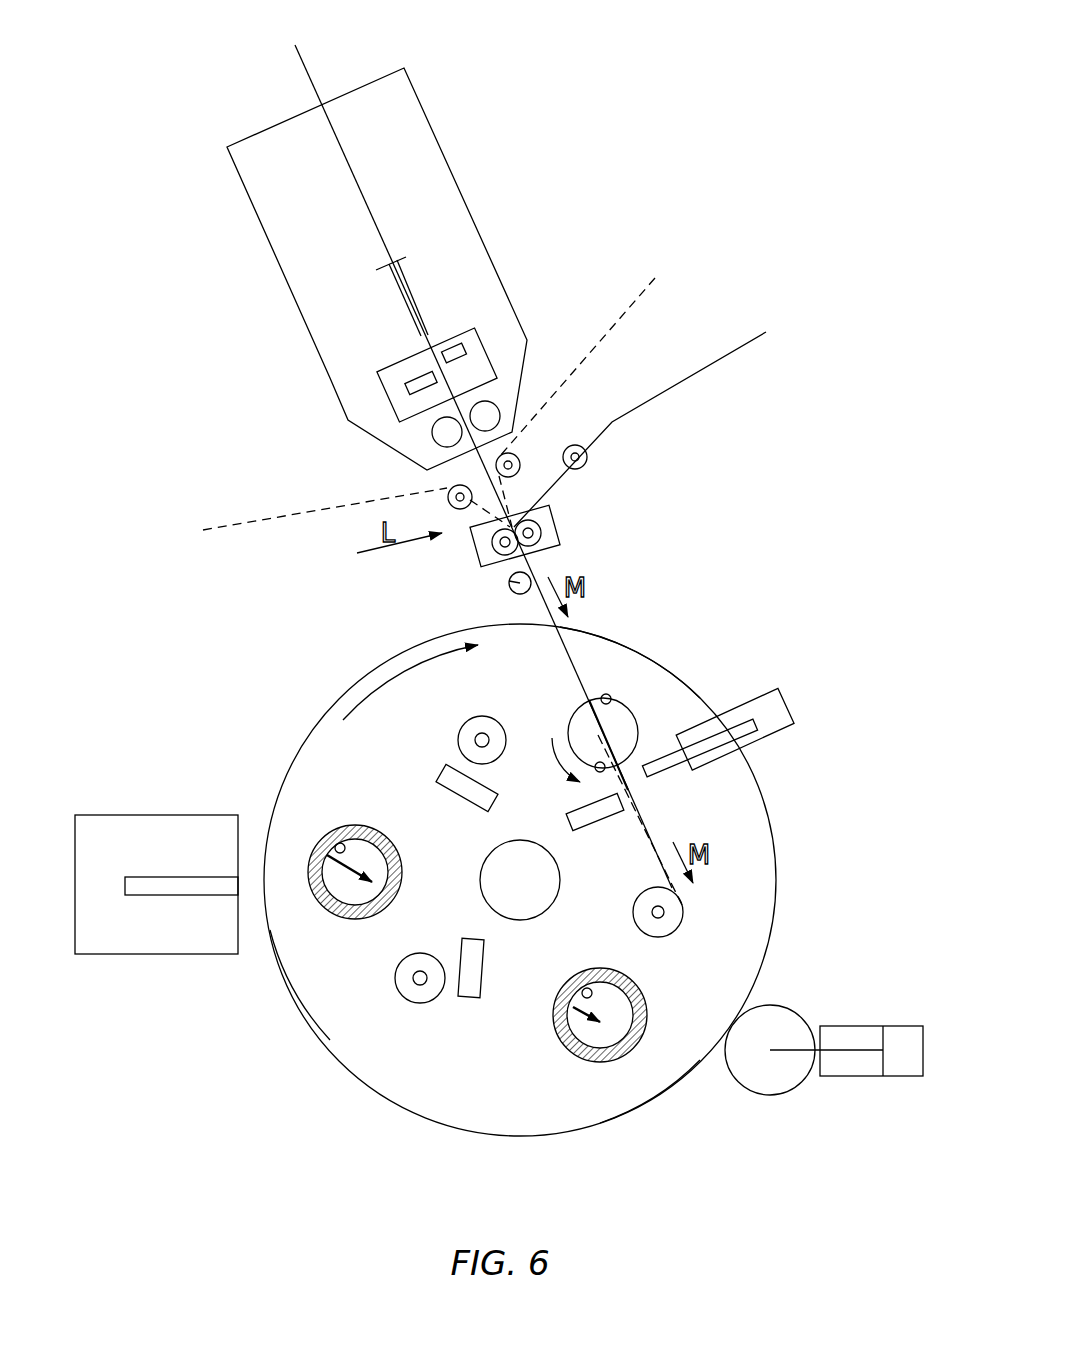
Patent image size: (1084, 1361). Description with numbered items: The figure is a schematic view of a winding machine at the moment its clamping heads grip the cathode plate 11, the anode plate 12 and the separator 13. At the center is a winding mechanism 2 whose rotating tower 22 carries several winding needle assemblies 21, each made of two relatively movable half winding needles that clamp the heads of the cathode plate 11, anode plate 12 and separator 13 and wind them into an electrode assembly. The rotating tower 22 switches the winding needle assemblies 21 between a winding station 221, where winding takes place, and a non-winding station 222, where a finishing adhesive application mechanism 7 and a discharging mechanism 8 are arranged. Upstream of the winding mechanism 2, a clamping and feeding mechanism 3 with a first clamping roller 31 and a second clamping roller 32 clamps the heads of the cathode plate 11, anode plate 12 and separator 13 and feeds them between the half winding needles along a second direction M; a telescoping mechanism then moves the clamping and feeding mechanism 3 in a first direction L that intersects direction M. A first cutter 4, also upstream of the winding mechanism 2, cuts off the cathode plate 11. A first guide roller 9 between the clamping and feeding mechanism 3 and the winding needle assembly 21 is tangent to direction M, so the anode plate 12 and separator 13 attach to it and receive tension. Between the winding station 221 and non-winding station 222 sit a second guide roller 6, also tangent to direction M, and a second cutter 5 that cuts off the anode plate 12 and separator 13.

The winding mechanism 2 is at (523, 912).
The clamping and feeding mechanism 3 is at (627, 482).
The first cutter 4 is at (480, 337).
The second cutter 5 is at (790, 712).
The second guide roller 6 is at (685, 915).
The finishing adhesive application mechanism 7 is at (850, 1077).
The discharging mechanism 8 is at (187, 955).
The first guide roller 9 is at (509, 583).
The cathode plate 11 is at (372, 213).
The anode plate 12 is at (723, 352).
The separator 13 is at (612, 322).
The winding needle assembly 21 is at (640, 730).
The rotating tower 22 is at (428, 1078).
The first clamping roller 31 is at (537, 518).
The second clamping roller 32 is at (558, 514).
The winding station 221 is at (623, 662).
The non-winding station 222 is at (328, 983).